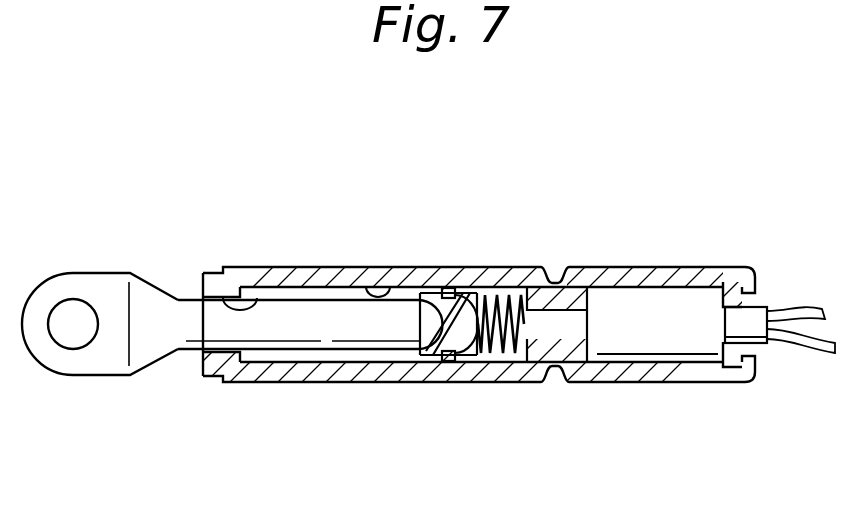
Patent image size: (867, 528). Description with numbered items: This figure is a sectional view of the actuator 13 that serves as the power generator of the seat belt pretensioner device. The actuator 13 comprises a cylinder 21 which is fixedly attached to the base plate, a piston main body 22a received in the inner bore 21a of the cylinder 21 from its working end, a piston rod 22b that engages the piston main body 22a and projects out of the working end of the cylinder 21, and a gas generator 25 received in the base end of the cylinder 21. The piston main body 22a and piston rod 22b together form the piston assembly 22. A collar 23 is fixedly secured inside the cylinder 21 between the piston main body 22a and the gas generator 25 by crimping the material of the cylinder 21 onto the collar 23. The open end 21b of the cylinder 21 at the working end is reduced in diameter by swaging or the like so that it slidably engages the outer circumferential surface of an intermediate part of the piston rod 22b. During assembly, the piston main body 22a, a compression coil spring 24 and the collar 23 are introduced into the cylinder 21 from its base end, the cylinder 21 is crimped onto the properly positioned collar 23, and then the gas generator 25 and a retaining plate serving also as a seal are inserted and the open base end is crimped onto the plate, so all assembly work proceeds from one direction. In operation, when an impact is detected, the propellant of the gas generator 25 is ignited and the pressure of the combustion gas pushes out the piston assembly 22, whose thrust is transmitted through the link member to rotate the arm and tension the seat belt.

The actuator 13 is at (609, 165).
The cylinder 21 is at (334, 278).
The inner bore 21a is at (390, 283).
The open end 21b is at (266, 292).
The piston assembly 22 is at (430, 452).
The piston main body 22a is at (438, 357).
The piston rod 22b is at (327, 340).
The collar 23 is at (573, 353).
The compression coil spring 24 is at (505, 358).
The gas generator 25 is at (645, 315).